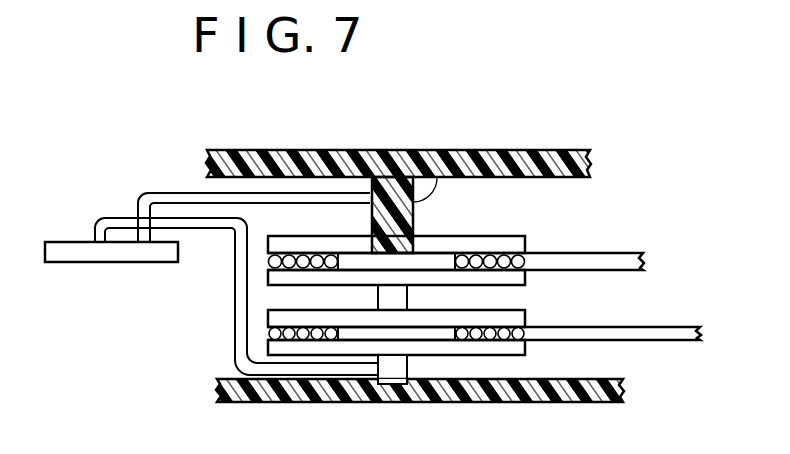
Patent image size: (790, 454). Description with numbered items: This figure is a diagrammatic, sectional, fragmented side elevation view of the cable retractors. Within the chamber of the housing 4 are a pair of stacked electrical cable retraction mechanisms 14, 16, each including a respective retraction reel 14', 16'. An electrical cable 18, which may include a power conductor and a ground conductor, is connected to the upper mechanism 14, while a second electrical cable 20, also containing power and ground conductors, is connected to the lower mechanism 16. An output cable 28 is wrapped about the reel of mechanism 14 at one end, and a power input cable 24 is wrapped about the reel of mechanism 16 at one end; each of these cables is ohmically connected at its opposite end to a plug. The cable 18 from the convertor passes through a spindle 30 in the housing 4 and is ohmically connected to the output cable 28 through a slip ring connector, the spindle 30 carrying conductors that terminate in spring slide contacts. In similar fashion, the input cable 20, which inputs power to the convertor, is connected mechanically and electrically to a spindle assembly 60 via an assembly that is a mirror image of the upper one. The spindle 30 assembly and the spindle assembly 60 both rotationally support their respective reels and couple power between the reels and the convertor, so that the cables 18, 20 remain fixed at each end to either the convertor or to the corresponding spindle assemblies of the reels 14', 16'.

The housing 4 is at (397, 150).
The spindle 30 is at (433, 152).
The electrical cable 18 is at (177, 193).
The second electrical cable 20 is at (118, 218).
The electrical cable retraction mechanism 14 is at (483, 248).
The retraction reel 14' is at (402, 217).
The output cable 28 is at (620, 253).
The electrical cable retraction mechanism 16 is at (481, 330).
The retraction reel 16' is at (397, 340).
The power input cable 24 is at (674, 327).
The spindle assembly 60 is at (400, 400).